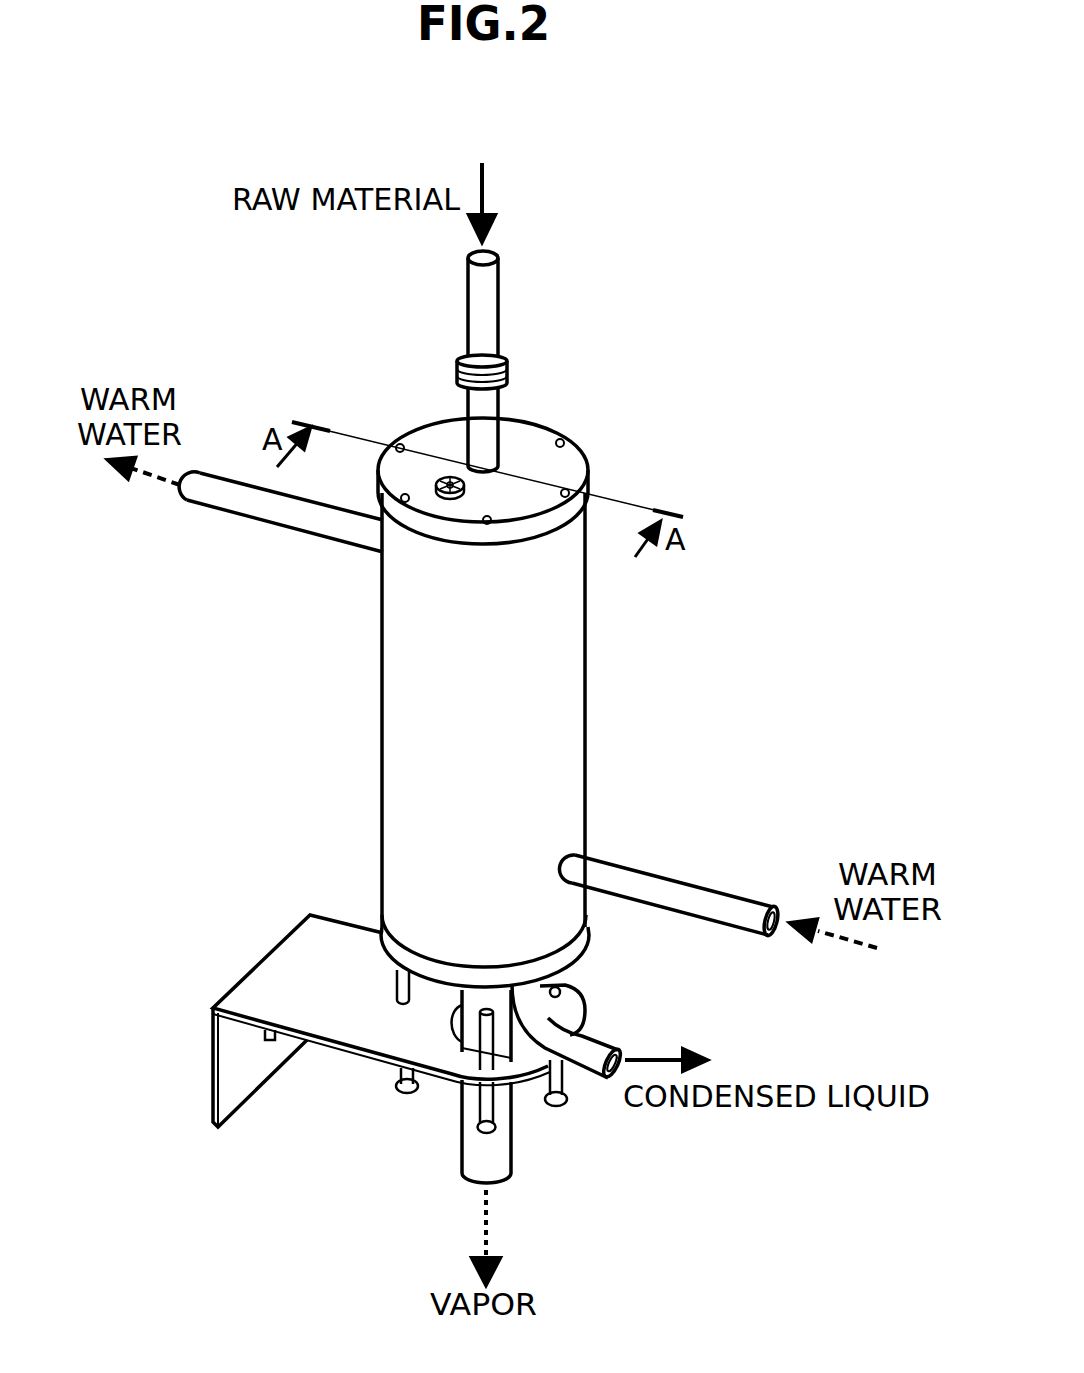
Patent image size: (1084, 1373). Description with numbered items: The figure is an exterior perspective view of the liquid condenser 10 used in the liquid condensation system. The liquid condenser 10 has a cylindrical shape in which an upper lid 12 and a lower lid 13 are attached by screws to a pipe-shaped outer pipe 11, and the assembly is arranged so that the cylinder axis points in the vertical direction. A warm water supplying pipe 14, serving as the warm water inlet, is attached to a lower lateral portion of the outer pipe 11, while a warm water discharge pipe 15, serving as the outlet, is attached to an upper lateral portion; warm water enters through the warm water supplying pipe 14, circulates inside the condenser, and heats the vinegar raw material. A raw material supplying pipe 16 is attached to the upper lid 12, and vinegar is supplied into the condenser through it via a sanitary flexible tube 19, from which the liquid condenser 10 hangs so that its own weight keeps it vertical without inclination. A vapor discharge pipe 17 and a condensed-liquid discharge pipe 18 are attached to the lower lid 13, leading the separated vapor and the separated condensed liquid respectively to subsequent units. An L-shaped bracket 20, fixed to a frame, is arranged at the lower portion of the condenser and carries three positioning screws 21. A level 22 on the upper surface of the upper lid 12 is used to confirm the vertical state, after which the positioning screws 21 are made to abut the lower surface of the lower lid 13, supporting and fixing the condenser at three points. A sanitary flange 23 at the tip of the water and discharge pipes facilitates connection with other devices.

The liquid condenser 10 is at (713, 242).
The outer pipe 11 is at (573, 722).
The upper lid 12 is at (573, 473).
The lower lid 13 is at (390, 948).
The warm water supplying pipe 14 is at (685, 893).
The warm water discharge pipe 15 is at (287, 530).
The raw material supplying pipe 16 is at (478, 413).
The vapor discharge pipe 17 is at (475, 1150).
The condensed-liquid discharge pipe 18 is at (588, 1046).
The flexible tube 19 is at (487, 302).
The L-shaped bracket 20 is at (237, 1067).
The positioning screws 21 is at (560, 1105).
The level 22 is at (447, 498).
The flange 23 is at (508, 374).